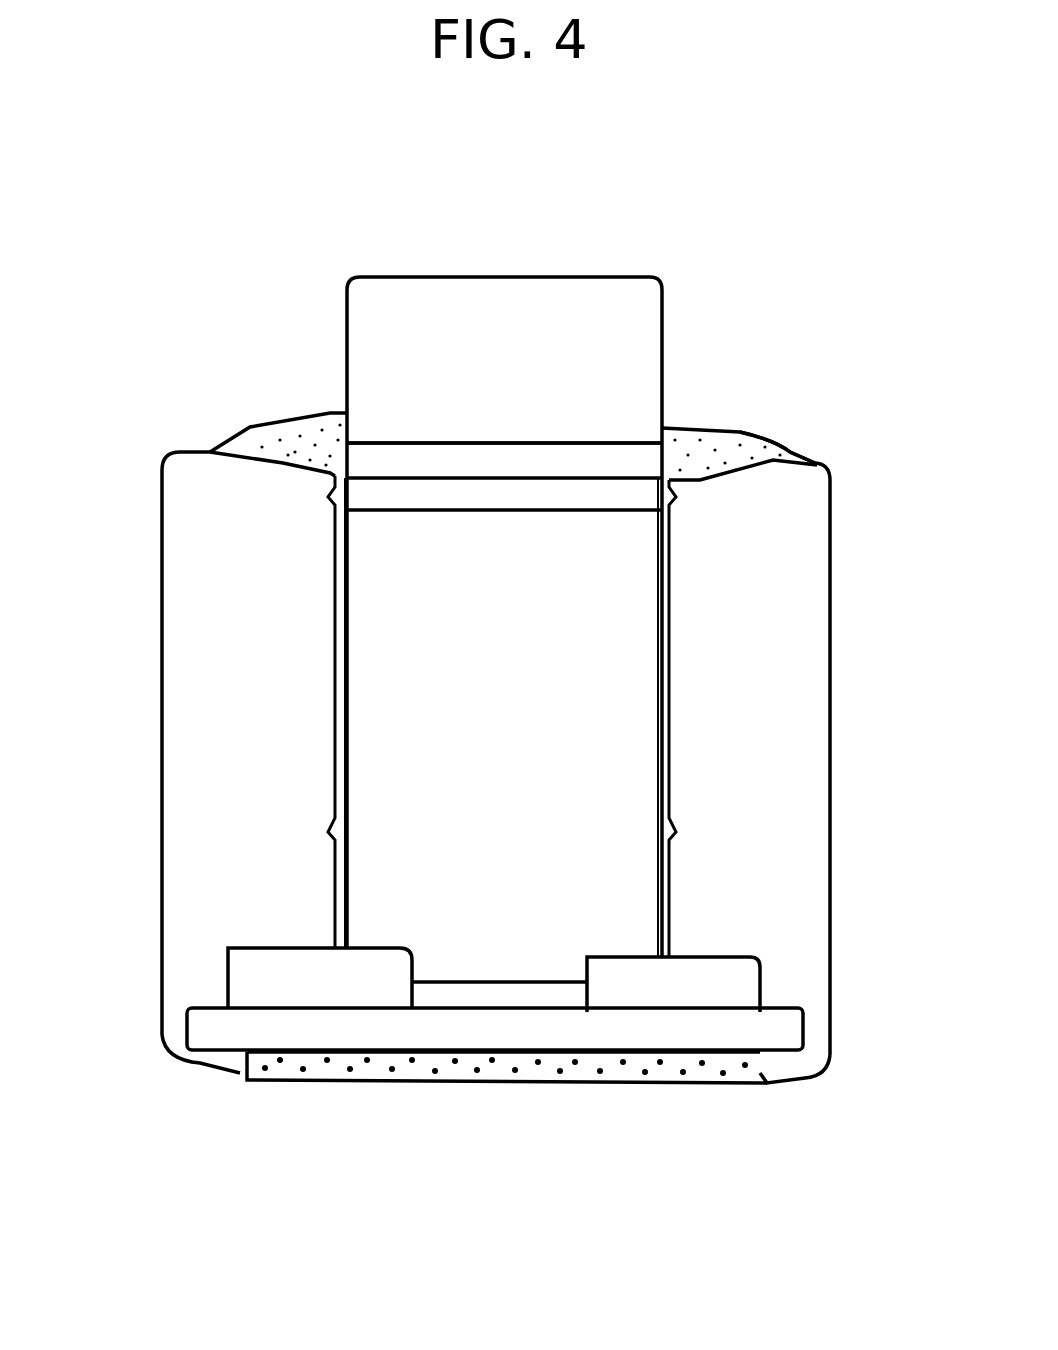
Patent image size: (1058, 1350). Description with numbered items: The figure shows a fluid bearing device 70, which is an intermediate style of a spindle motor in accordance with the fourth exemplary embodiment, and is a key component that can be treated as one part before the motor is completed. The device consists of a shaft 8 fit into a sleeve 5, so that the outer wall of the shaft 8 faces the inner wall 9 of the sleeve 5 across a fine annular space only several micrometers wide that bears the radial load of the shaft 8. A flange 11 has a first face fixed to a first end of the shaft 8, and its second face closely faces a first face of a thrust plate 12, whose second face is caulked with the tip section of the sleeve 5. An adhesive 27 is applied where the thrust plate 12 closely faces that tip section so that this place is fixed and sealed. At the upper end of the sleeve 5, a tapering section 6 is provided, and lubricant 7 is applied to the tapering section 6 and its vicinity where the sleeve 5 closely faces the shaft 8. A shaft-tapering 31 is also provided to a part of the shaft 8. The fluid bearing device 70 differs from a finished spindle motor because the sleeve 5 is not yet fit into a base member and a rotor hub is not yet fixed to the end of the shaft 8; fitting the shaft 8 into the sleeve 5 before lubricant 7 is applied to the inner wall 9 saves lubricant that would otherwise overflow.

The fluid bearing device 70 is at (520, 184).
The sleeve 5 is at (778, 622).
The tapering section 6 is at (777, 445).
The lubricant 7 is at (702, 448).
The shaft 8 is at (638, 348).
The shaft-tapering 31 is at (425, 460).
The inner wall 9 is at (670, 792).
The flange 11 is at (617, 968).
The thrust plate 12 is at (327, 1037).
The adhesive 27 is at (540, 1080).